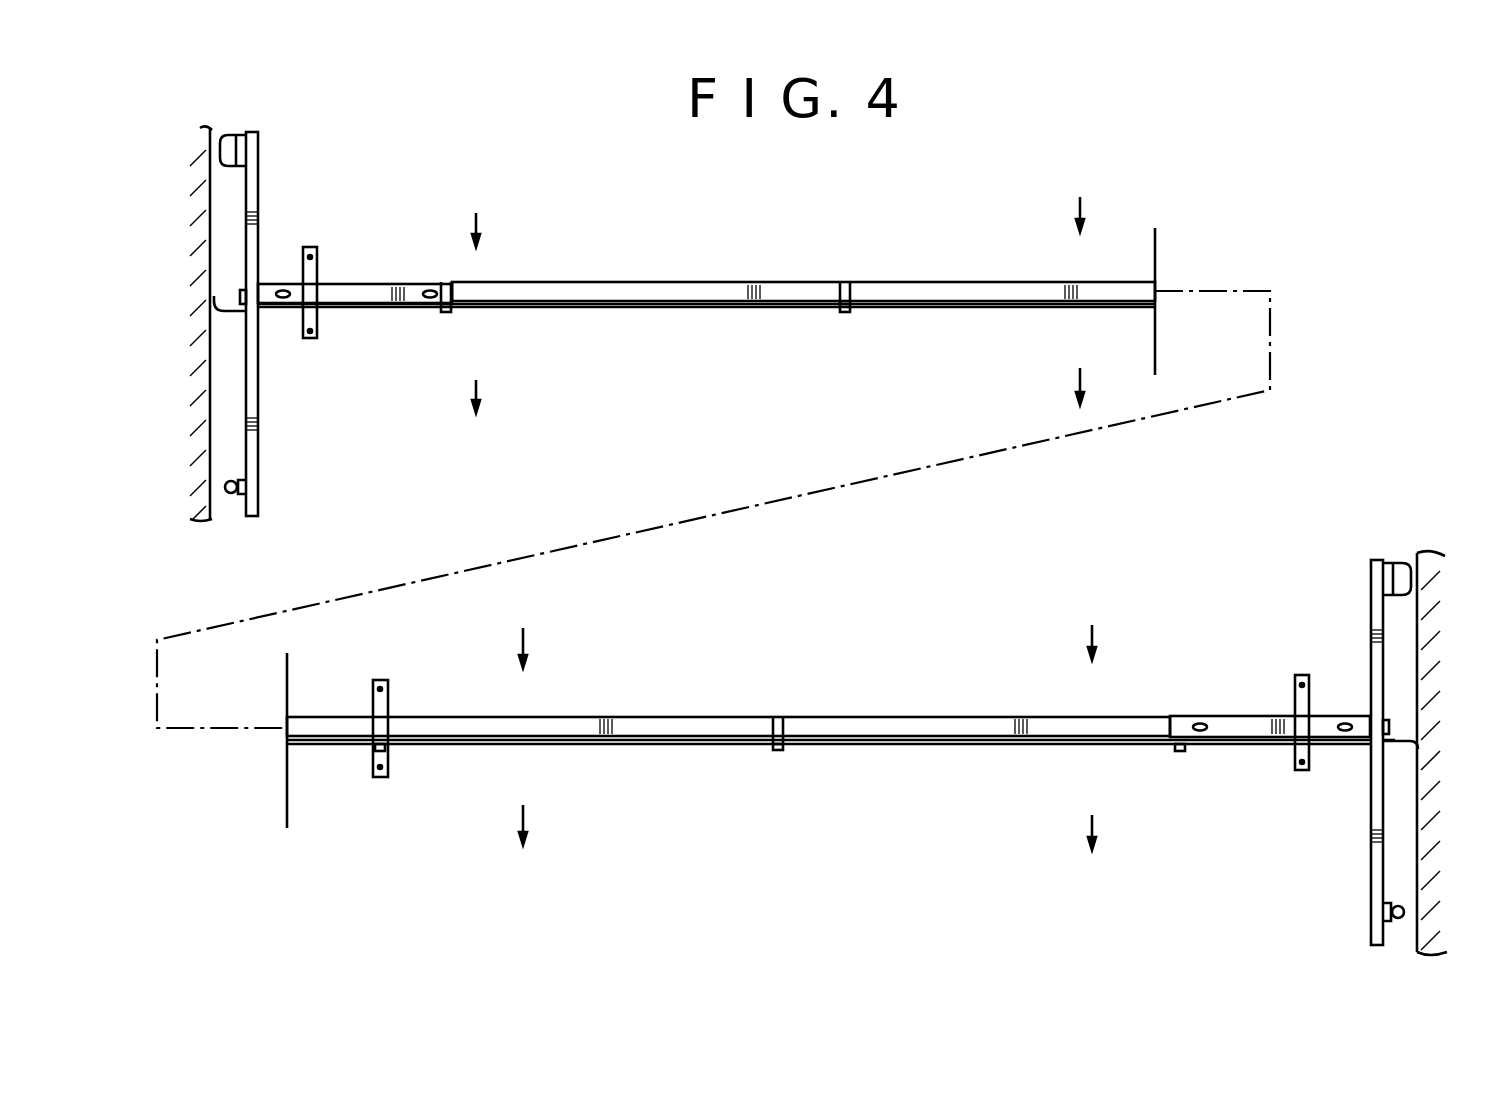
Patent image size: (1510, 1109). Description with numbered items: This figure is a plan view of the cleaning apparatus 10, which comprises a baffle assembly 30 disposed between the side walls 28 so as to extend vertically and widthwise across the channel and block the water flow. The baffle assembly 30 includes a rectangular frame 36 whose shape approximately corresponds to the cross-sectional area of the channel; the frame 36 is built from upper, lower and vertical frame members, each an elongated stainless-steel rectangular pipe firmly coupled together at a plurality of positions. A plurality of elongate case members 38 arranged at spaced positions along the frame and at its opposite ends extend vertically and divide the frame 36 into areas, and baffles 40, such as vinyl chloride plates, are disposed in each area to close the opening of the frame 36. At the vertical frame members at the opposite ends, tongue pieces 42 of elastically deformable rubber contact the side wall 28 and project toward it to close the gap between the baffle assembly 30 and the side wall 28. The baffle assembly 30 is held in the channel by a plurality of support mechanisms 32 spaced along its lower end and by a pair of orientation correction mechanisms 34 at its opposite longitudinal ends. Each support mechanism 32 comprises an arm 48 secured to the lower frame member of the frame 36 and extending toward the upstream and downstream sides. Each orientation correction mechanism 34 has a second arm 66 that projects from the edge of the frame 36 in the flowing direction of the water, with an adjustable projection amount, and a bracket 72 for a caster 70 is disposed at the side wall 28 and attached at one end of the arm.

The cleaning apparatus 10 is at (938, 196).
The side wall 28 is at (200, 422).
The baffle assembly 30 is at (670, 278).
The support mechanism 32 is at (317, 325).
The orientation correction mechanism 34 is at (264, 455).
The rectangular frame 36 is at (982, 282).
The case member 38 is at (447, 312).
The baffle 40 is at (376, 308).
The tongue piece 42 is at (222, 311).
The arm 48 is at (323, 232).
The second arm 66 is at (258, 392).
The caster 70 is at (226, 487).
The bracket 72 is at (220, 150).